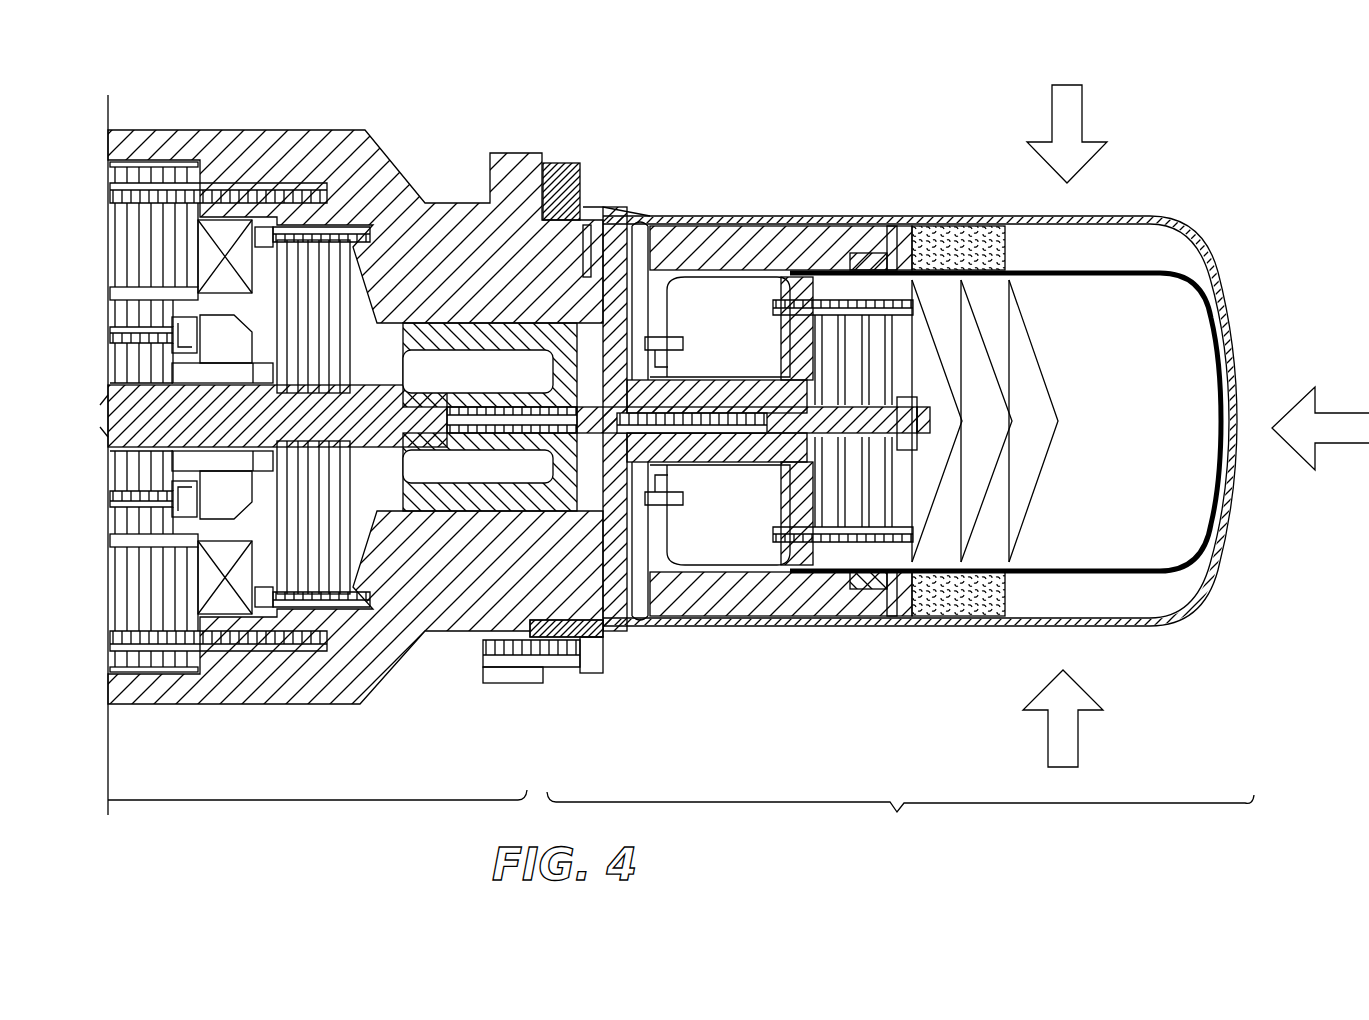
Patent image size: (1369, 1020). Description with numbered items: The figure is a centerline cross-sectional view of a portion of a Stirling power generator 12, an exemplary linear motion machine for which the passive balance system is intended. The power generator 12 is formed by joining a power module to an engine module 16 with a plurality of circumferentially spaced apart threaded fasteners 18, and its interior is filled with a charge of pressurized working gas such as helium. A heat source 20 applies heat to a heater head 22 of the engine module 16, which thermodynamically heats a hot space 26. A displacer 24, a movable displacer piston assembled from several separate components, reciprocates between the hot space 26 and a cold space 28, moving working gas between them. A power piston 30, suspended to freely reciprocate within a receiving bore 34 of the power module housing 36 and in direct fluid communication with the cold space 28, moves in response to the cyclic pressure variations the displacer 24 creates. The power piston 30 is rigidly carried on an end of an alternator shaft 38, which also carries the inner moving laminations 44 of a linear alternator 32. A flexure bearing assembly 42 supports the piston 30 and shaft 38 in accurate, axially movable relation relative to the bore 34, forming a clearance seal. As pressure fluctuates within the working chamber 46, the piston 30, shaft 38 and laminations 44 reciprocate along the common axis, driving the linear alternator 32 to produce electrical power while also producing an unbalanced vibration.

The power generator 12 is at (712, 442).
The power module housing 36 is at (258, 128).
The linear alternator 32 is at (112, 187).
The flexure bearing assembly 42 is at (264, 310).
The alternator shaft 38 is at (210, 432).
The working chamber 46 is at (590, 382).
The receiving bore 34 is at (398, 508).
The power piston 30 is at (530, 500).
The cold space 28 is at (662, 303).
The inner moving laminations 44 is at (118, 519).
The threaded fasteners 18 is at (602, 660).
The hot space 26 is at (1218, 338).
The displacer 24 is at (1225, 487).
The heater head 22 is at (1223, 556).
The heat source 20 is at (1052, 113).
The engine module 16 is at (681, 821).